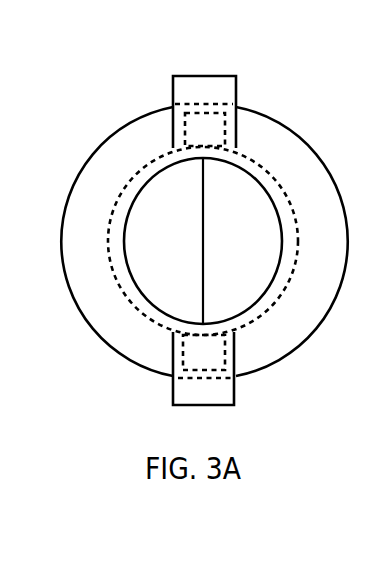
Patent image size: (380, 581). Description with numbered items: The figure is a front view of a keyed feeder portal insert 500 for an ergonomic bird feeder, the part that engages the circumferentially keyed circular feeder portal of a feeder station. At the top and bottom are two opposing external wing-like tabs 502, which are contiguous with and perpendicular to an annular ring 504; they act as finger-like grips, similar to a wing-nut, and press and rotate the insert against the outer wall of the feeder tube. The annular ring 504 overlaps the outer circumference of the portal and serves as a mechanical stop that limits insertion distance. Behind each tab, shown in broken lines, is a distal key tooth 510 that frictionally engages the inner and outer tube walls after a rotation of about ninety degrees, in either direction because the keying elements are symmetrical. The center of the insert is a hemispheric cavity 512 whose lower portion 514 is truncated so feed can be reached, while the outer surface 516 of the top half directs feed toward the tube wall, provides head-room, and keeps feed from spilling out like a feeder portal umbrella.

The keyed feeder portal insert 500 is at (180, 236).
The wing-like tabs 502 is at (8, 436).
The annular ring 504 is at (110, 342).
The distal key tooth 510 is at (228, 138).
The hemispheric cavity 512 is at (146, 180).
The lower portion of the hemisphere 514 is at (203, 272).
The outer surface of the top half of the hemispheric cavity 516 is at (112, 210).